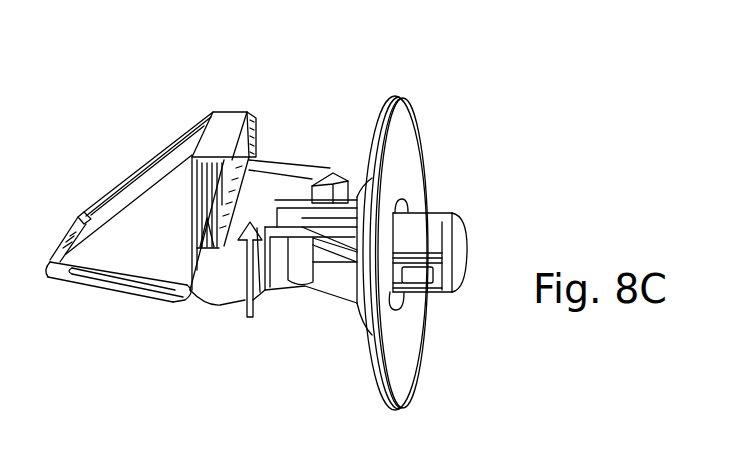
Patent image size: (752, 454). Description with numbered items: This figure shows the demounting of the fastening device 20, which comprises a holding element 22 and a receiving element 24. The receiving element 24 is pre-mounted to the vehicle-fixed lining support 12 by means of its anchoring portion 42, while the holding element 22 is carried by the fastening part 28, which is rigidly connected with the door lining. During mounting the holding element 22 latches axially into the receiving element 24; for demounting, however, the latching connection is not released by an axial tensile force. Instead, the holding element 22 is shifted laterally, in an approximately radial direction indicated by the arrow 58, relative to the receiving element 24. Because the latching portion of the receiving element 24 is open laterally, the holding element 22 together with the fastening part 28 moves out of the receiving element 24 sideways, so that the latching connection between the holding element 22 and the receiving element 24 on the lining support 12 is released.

The fastening device 20 is at (517, 112).
The lining support 12 is at (405, 336).
The anchoring portion 42 is at (484, 216).
The fastening part 28 is at (231, 103).
The holding element 22 is at (305, 150).
The receiving element 24 is at (304, 314).
The arrow (lateral shifting direction) 58 is at (243, 307).